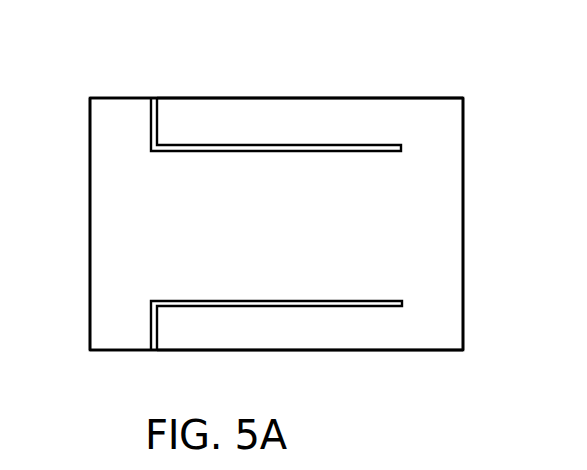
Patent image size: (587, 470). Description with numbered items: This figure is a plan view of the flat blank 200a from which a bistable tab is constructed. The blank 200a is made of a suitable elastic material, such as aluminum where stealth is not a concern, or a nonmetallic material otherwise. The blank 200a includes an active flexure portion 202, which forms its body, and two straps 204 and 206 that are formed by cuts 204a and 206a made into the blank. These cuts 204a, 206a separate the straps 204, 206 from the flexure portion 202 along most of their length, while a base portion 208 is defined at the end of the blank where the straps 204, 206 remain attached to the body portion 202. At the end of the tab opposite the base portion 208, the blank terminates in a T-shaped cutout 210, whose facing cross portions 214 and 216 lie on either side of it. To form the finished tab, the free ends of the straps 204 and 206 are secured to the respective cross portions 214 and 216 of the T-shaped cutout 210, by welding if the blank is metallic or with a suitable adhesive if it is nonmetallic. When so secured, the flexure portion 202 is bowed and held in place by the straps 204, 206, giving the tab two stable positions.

The blank 200a is at (452, 140).
The active flexure portion 202 is at (243, 172).
The strap 204 is at (343, 119).
The cut 204a is at (181, 150).
The strap 206 is at (270, 332).
The cut 206a is at (155, 350).
The base portion 208 is at (445, 233).
The T-shaped cutout 210 is at (113, 230).
The cross portion 214 is at (107, 117).
The cross portion 216 is at (113, 320).